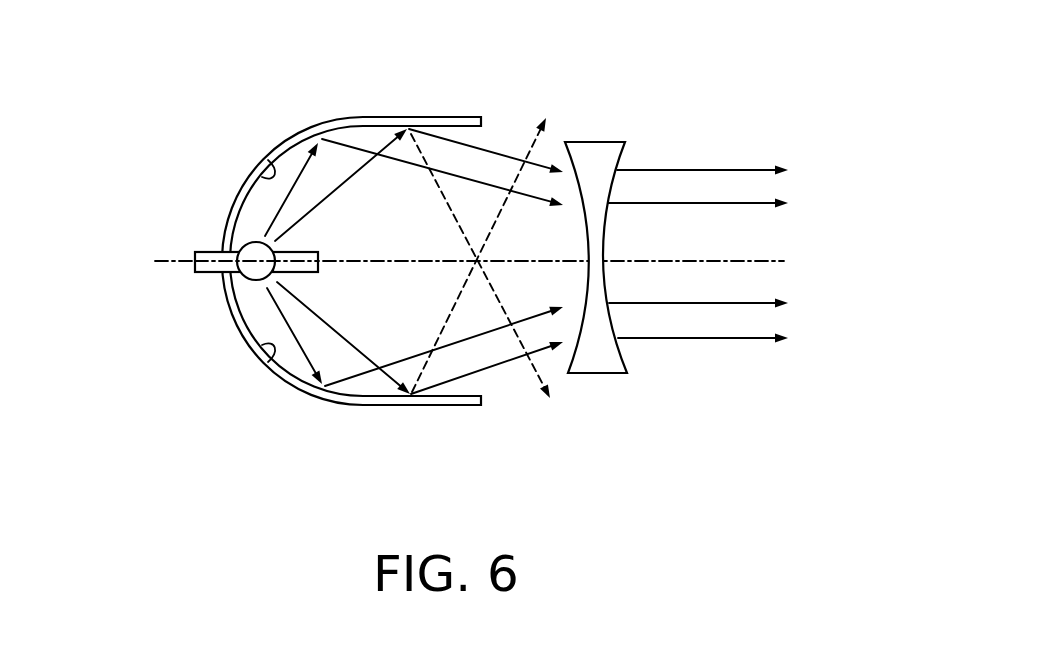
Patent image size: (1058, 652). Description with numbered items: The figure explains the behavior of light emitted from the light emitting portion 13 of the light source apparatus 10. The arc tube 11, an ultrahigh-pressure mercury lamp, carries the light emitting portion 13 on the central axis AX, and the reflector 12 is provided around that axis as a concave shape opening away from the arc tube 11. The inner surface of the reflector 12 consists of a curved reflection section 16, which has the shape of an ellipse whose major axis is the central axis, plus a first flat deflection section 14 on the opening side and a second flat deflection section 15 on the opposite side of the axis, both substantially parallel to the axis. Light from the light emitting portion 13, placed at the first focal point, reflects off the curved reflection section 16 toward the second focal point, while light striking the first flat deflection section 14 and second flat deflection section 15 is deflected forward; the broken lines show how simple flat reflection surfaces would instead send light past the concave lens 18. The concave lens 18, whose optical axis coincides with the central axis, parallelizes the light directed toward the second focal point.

The light source apparatus 10 is at (337, 74).
The arc tube 11 is at (247, 256).
The reflector 12 is at (305, 128).
The light emitting portion 13 is at (252, 270).
The first flat deflection section 14 is at (483, 125).
The second flat deflection section 15 is at (478, 394).
The curved reflection section 16 is at (268, 160).
The concave lens 18 is at (599, 142).